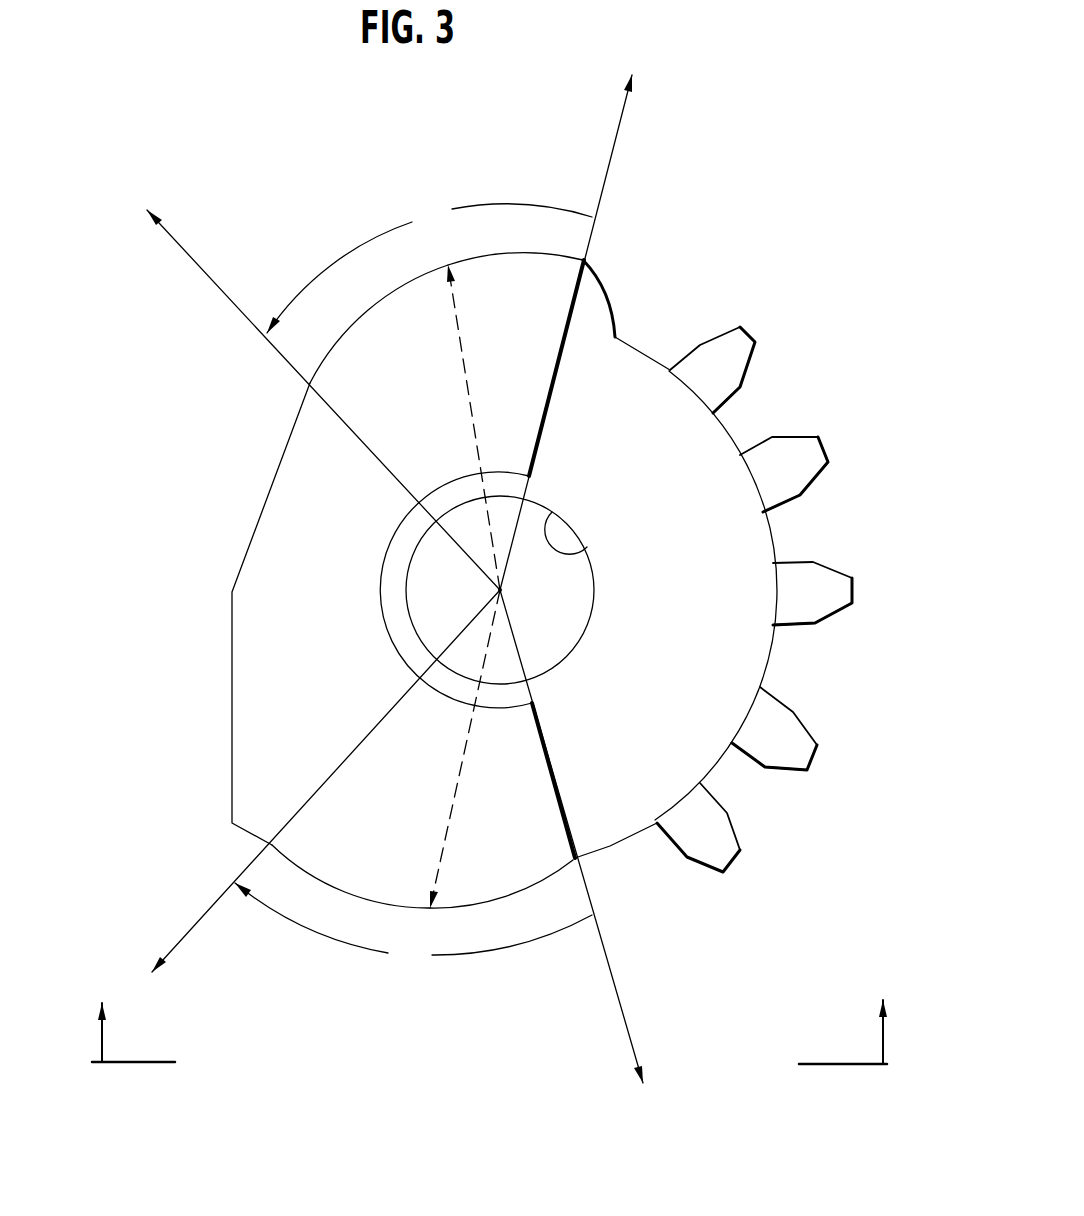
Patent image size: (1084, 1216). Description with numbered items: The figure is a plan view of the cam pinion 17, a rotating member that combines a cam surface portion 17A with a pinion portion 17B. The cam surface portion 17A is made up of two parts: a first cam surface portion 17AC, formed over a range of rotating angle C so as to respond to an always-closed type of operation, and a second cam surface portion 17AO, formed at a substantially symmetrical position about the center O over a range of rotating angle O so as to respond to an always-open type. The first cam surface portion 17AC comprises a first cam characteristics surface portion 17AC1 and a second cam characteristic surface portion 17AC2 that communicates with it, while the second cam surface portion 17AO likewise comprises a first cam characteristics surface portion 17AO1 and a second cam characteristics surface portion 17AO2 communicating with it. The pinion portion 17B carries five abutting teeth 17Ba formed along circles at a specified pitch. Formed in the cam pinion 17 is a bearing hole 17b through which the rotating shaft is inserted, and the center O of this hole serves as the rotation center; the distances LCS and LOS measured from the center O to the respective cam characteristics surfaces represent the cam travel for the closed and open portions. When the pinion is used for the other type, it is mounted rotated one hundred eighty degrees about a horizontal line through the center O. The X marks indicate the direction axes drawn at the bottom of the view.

The cam pinion 17 is at (666, 338).
The cam surface portion 17A is at (257, 585).
The second cam surface portion 17AO is at (352, 333).
The first cam characteristics surface portion 17AO1 is at (338, 412).
The second cam characteristics surface portion 17AO2 is at (459, 323).
The first cam surface portion 17AC is at (360, 898).
The first cam characteristics surface portion 17AC1 is at (444, 852).
The second cam characteristic surface portion 17AC2 is at (297, 813).
The pinion portion 17B is at (743, 546).
The abutting teeth 17Ba is at (724, 355).
The bearing hole 17b is at (587, 546).
The center O is at (500, 590).
The distance LOS is at (473, 427).
The distance LCS is at (465, 749).
The axis direction marker X is at (488, 1017).